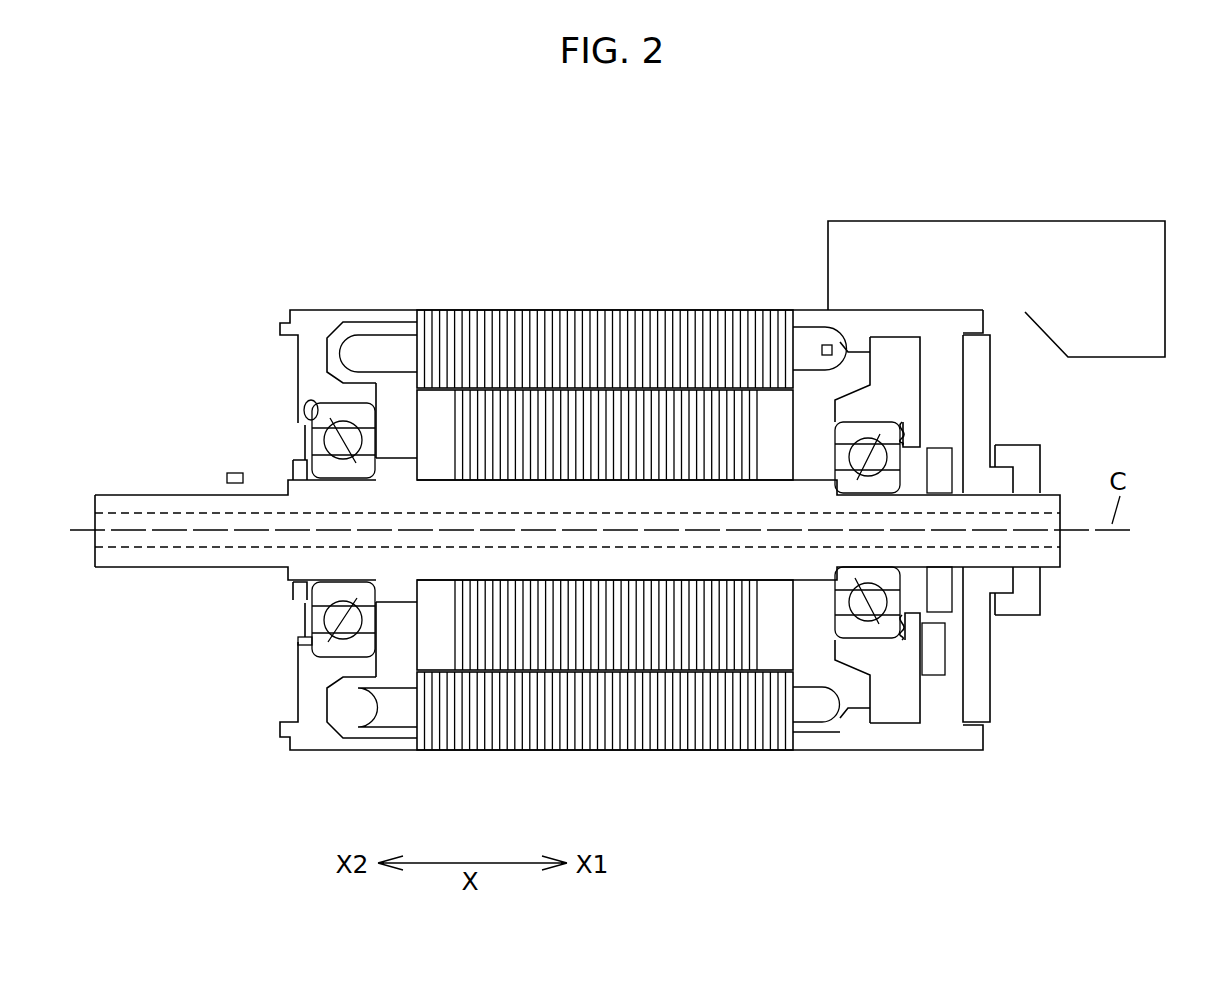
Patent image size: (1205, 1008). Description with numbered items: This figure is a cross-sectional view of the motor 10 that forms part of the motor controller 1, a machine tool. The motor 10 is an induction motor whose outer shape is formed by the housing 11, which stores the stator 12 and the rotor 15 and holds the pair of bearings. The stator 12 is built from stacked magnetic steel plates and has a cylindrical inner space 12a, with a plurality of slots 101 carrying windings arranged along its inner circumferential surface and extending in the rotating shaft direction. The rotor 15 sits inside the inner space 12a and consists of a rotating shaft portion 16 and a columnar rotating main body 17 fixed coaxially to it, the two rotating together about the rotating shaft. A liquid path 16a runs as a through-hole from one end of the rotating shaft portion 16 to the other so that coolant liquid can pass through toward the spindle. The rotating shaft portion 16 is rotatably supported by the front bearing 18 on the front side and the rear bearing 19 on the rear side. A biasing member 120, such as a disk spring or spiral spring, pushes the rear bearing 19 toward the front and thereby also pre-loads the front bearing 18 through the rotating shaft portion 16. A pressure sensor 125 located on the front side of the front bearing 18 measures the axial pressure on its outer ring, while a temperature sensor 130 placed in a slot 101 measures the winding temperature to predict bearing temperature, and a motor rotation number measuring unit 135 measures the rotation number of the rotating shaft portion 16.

The motor controller 1 is at (1136, 171).
The motor 10 is at (594, 190).
The housing 11 is at (363, 311).
The stator 12 is at (728, 492).
The inner space 12a is at (818, 643).
The rotor 15 is at (433, 416).
The rotating shaft portion 16 is at (667, 495).
The liquid path 16a is at (765, 545).
The rotating main body 17 is at (447, 402).
The front bearing 18 is at (305, 644).
The rear bearing 19 is at (880, 633).
The slot 101 is at (720, 300).
The biasing member 120 is at (902, 412).
The pressure sensor 125 is at (305, 404).
The temperature sensor 130 is at (830, 351).
The motor rotation number measuring unit 135 is at (233, 473).